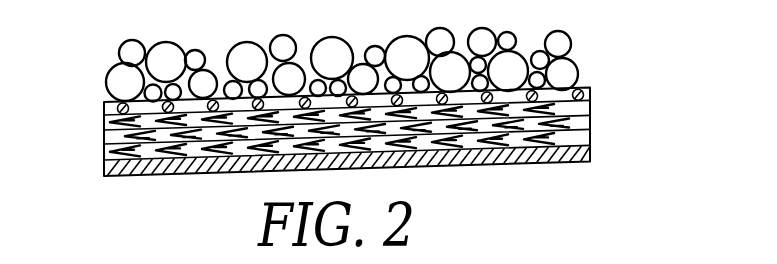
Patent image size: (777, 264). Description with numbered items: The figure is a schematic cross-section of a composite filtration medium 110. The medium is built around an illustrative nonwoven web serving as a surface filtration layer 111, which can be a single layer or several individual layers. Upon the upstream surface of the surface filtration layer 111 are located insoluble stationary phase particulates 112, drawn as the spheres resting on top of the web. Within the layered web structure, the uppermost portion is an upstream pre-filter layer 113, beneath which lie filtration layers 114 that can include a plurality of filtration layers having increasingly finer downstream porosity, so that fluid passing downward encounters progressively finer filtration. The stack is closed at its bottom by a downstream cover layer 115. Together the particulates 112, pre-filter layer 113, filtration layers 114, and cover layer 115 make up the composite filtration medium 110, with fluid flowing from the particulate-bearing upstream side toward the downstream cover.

The composite filtration medium 110 is at (662, 5).
The surface filtration layer 111 is at (593, 87).
The insoluble stationary phase particulates 112 is at (121, 78).
The upstream pre-filter layer 113 is at (108, 108).
The filtration layers 114 is at (106, 149).
The downstream cover layer 115 is at (539, 165).